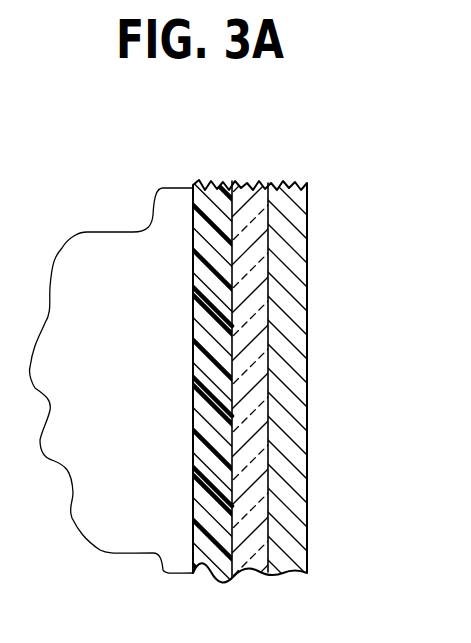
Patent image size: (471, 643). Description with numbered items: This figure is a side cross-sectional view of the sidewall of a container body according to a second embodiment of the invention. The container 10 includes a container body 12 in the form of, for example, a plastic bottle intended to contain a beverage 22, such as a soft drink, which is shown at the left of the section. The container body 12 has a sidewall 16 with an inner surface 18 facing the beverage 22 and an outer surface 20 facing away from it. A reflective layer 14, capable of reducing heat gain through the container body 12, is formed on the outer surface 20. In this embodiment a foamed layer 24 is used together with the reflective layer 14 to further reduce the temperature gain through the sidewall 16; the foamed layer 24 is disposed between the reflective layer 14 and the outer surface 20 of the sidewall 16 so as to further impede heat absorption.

The container 10 is at (270, 352).
The container body 12 is at (205, 186).
The reflective layer 14 is at (303, 275).
The sidewall 16 is at (203, 292).
The inner surface 18 is at (203, 392).
The outer surface 20 is at (203, 458).
The beverage 22 is at (91, 257).
The foamed layer 24 is at (245, 185).